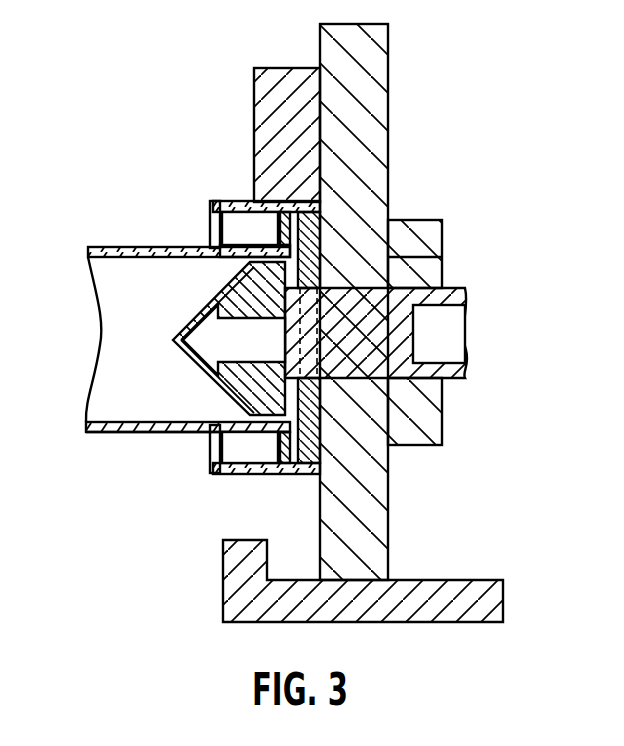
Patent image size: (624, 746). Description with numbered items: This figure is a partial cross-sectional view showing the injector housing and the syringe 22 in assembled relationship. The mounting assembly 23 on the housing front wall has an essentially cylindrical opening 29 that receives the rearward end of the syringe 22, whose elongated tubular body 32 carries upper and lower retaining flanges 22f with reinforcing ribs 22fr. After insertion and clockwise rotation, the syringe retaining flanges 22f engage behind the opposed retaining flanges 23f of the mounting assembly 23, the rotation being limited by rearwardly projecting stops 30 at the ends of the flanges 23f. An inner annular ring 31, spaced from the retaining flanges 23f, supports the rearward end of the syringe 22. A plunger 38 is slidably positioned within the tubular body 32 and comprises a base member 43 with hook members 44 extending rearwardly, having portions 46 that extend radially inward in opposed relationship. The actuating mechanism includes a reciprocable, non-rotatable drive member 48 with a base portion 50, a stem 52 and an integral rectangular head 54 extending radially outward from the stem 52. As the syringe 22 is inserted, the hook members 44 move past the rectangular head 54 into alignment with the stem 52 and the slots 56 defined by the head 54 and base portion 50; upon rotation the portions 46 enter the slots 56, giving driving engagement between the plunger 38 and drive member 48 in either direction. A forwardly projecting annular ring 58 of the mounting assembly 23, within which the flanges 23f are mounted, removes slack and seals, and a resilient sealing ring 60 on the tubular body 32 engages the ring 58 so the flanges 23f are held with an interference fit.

The syringe 22 is at (86, 225).
The retaining flanges 22f is at (250, 200).
The reinforcing ribs 22fr is at (324, 455).
The mounting assembly 23 is at (434, 70).
The retaining flanges 23f is at (232, 205).
The cylindrical opening 29 is at (245, 207).
The stops 30 is at (265, 178).
The inner annular ring 31 is at (322, 230).
The tubular body 32 is at (130, 434).
The plunger 38 is at (150, 340).
The base member 43 is at (228, 290).
The hook members 44 is at (375, 242).
The radially extending portions 46 is at (442, 253).
The drive member 48 is at (472, 398).
The base portion 50 is at (467, 290).
The stem 52 is at (215, 303).
The rectangular head 54 is at (250, 383).
The slots 56 is at (268, 383).
The annular ring 58 is at (238, 212).
The sealing ring 60 is at (215, 225).